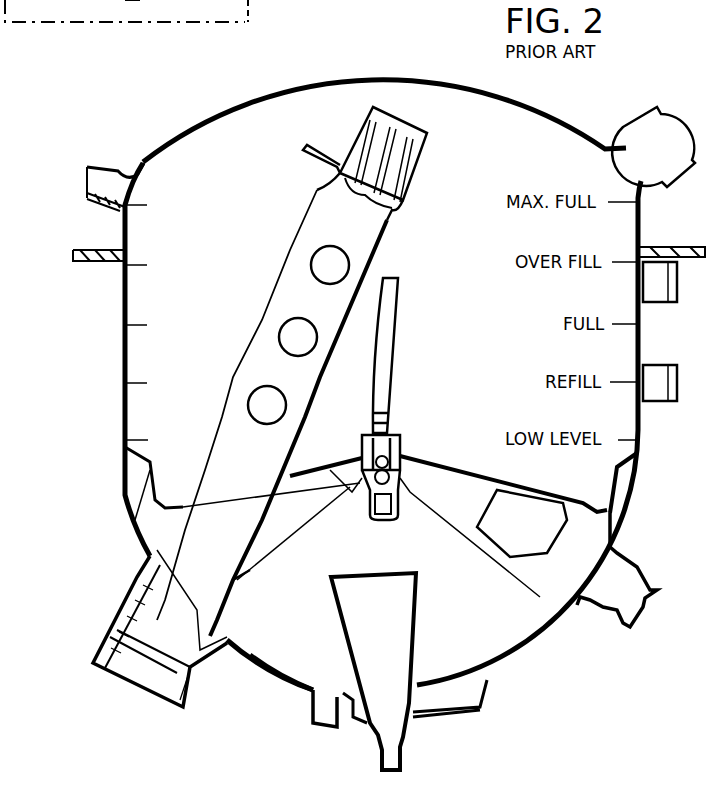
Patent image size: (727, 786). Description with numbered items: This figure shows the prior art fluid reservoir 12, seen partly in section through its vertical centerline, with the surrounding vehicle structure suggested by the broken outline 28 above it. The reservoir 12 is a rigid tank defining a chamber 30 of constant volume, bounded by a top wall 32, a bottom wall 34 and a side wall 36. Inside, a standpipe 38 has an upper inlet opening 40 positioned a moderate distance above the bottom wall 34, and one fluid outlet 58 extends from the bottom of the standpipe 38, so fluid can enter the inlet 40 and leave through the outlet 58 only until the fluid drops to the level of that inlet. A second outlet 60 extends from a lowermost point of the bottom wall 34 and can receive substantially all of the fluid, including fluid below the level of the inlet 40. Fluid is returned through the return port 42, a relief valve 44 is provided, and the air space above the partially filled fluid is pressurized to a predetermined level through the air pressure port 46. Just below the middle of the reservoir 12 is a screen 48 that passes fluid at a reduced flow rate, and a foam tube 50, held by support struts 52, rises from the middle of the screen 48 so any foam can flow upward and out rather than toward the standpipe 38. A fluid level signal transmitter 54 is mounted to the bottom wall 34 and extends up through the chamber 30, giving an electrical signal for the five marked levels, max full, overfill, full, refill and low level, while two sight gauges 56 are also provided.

The fluid reservoir 12 is at (92, 348).
The vehicle body 28 is at (86, 26).
The chamber 30 is at (446, 352).
The top wall 32 is at (395, 80).
The bottom wall 34 is at (298, 692).
The side wall 36 is at (118, 288).
The standpipe 38 is at (412, 650).
The upper inlet opening 40 is at (398, 570).
The return port 42 is at (628, 580).
The relief valve 44 is at (638, 120).
The air pressure port 46 is at (97, 172).
The screen 48 is at (445, 512).
The foam tube 50 is at (385, 392).
The support struts 52 is at (470, 470).
The fluid level signal transmitter 54 is at (292, 245).
The sight gauges 56 is at (683, 388).
The fluid outlet 58 is at (405, 762).
The second outlet 60 is at (322, 725).